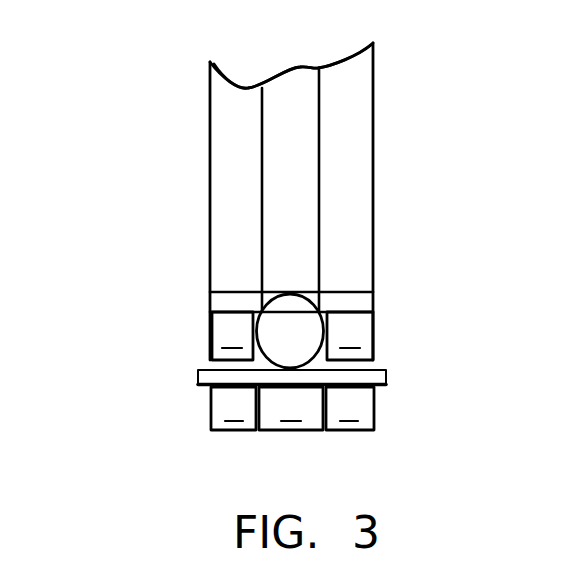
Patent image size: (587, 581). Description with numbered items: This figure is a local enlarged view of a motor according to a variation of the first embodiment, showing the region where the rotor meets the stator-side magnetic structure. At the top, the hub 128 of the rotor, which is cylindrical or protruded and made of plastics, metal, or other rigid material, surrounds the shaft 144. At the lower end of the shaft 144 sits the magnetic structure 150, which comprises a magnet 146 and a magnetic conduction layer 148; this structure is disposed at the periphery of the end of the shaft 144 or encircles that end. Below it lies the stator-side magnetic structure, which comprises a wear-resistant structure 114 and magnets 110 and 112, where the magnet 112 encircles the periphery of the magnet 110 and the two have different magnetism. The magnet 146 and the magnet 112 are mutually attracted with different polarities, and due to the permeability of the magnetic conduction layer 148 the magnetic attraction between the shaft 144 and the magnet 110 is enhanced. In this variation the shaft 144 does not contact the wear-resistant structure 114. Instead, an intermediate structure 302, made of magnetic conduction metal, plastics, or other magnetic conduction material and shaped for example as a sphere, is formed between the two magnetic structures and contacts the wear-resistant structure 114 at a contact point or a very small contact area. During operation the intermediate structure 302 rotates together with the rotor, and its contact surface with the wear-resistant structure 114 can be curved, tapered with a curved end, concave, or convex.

The magnet 110 is at (312, 431).
The magnet 112 is at (368, 431).
The wear-resistant structure 114 is at (199, 378).
The hub 128 is at (361, 161).
The shaft 144 is at (292, 78).
The magnet 146 is at (210, 346).
The magnetic conduction layer 148 is at (210, 301).
The magnetic structure 150 is at (208, 325).
The intermediate structure 302 is at (300, 356).